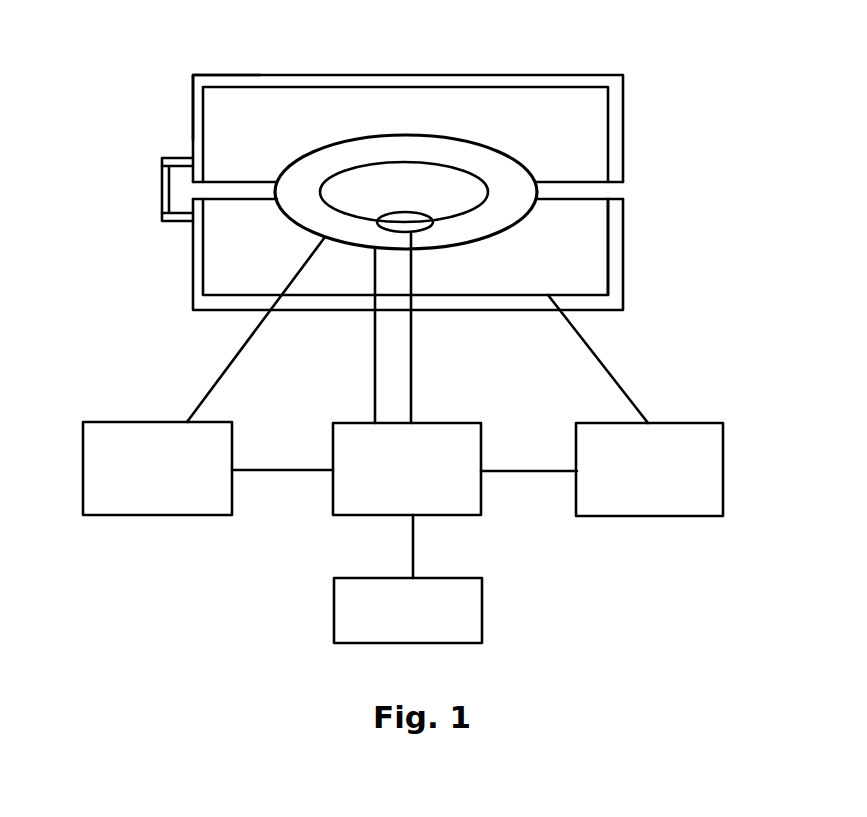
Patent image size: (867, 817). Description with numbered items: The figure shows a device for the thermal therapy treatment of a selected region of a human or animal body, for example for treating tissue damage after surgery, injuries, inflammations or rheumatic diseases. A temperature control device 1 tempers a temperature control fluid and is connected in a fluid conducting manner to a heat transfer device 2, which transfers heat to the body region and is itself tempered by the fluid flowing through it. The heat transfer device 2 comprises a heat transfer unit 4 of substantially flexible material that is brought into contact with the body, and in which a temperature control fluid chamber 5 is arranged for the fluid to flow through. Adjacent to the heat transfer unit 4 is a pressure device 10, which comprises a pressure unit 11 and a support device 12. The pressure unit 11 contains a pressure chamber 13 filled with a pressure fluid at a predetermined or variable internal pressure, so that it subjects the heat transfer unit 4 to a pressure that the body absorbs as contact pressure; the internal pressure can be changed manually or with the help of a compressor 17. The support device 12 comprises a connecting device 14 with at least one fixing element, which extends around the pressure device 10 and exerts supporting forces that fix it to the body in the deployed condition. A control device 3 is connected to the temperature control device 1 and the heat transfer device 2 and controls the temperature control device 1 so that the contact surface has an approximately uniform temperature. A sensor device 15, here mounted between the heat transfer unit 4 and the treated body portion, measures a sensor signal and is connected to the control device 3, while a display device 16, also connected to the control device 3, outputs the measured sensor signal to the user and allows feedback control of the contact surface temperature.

The temperature control device 1 is at (82, 488).
The heat transfer device 2 is at (497, 58).
The control device 3 is at (482, 505).
The heat transfer unit 4 is at (488, 147).
The temperature control fluid chamber 5 is at (312, 165).
The pressure device 10 is at (624, 132).
The pressure unit 11 is at (596, 262).
The support device 12 is at (196, 102).
The pressure chamber 13 is at (205, 264).
The connecting device 14 is at (162, 186).
The sensor device 15 is at (417, 211).
The display device 16 is at (483, 618).
The compressor 17 is at (724, 497).